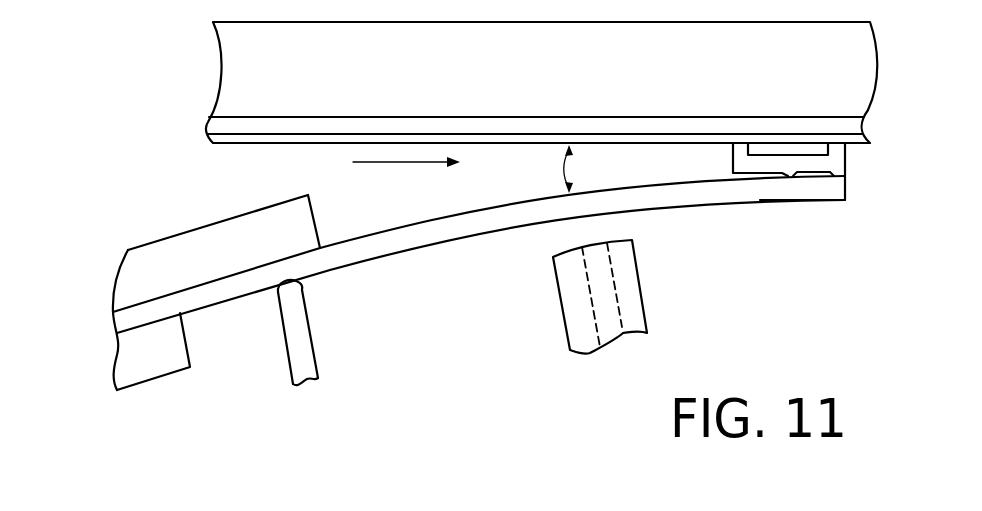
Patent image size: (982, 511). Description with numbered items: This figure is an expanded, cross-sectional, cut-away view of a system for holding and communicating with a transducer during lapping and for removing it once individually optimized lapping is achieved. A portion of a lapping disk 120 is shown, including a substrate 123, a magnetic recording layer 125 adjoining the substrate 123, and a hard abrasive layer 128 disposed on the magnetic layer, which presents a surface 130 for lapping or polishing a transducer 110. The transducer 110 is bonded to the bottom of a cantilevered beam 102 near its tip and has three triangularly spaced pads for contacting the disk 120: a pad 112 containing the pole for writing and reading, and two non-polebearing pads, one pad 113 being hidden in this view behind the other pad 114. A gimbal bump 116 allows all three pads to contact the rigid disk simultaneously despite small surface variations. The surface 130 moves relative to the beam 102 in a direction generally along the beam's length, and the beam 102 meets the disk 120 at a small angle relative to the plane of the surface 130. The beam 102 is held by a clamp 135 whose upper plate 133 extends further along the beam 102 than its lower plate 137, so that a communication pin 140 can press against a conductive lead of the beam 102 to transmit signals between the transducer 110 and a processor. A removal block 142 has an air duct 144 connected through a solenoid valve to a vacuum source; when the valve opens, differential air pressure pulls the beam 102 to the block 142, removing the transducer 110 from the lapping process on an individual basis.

The cantilevered beam 102 is at (430, 246).
The transducer 110 is at (815, 165).
The pad 112 is at (846, 154).
The non-polebearing pad 113 is at (712, 128).
The non-polebearing pad 114 is at (733, 154).
The gimbal bump 116 is at (787, 178).
The lapping disk 120 is at (163, 43).
The substrate 123 is at (560, 78).
The magnetic recording layer 125 is at (230, 123).
The hard abrasive layer 128 is at (220, 138).
The surface 130 is at (247, 158).
The upper plate 133 is at (150, 240).
The clamp 135 is at (130, 292).
The lower plate 137 is at (143, 387).
The communication pin 140 is at (305, 330).
The removal block 142 is at (644, 320).
The air duct 144 is at (617, 285).